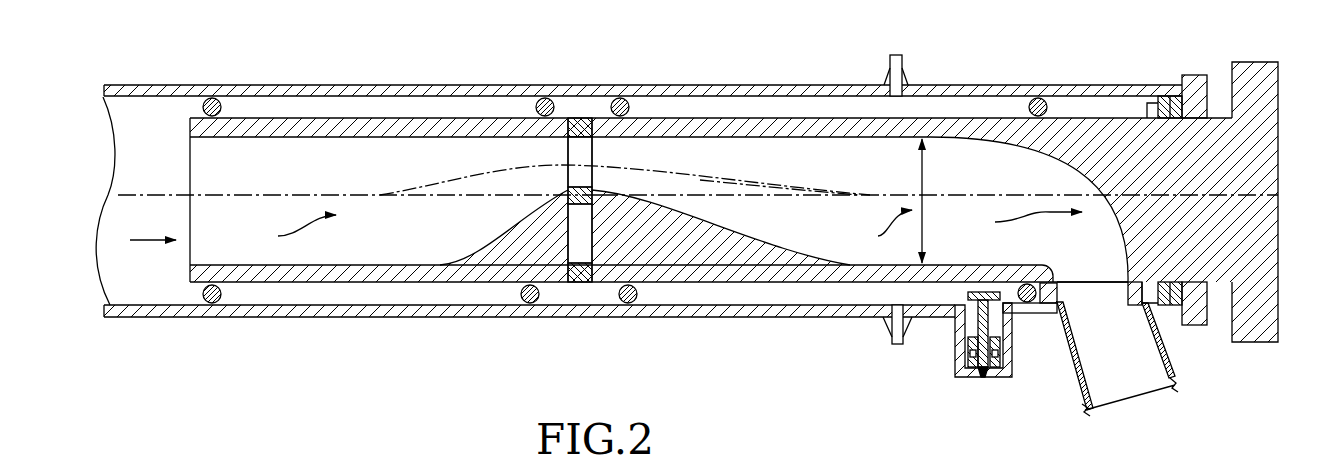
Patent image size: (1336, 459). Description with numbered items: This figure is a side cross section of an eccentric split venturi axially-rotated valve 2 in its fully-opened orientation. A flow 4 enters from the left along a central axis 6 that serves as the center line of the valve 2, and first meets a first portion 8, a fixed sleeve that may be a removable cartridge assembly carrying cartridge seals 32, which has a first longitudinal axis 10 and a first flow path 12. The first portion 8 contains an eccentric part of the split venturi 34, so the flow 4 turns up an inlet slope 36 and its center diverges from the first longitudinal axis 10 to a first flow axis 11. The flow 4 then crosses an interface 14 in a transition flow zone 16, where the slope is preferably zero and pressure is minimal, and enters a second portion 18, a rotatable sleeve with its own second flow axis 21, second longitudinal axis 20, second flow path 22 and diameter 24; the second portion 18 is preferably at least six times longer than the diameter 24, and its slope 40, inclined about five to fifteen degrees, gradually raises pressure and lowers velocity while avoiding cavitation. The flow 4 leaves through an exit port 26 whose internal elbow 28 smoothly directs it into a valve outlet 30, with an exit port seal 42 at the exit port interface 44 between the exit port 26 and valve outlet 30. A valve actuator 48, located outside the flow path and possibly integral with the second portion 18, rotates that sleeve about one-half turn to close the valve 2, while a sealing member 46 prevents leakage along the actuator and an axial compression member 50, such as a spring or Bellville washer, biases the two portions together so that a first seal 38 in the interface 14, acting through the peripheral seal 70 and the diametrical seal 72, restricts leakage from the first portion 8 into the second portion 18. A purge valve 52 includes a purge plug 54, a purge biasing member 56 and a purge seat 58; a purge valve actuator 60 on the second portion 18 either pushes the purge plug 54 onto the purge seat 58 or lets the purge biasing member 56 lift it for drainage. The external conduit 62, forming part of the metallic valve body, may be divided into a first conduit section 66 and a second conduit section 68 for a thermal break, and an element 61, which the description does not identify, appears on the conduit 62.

The valve 2 is at (232, 78).
The flow 4 is at (142, 240).
The central axis 6 is at (110, 182).
The first portion 8 is at (264, 118).
The first longitudinal axis 10 is at (285, 194).
The first flow axis 11 is at (480, 180).
The first flow path 12 is at (290, 229).
The interface 14 is at (575, 152).
The transition flow zone 16 is at (590, 116).
The second portion 18 is at (682, 117).
The second longitudinal axis 20 is at (870, 193).
The second flow axis 21 is at (700, 168).
The second flow path 22 is at (878, 230).
The diameter 24 is at (926, 177).
The exit port 26 is at (1018, 220).
The internal elbow 28 is at (1062, 167).
The valve outlet 30 is at (1130, 405).
The cartridge seals 32 is at (212, 303).
The split venturi 34 is at (530, 251).
The inlet slope 36 is at (500, 232).
The first seal 38 is at (570, 117).
The slope 40 is at (745, 232).
The exit port seal 42 is at (1060, 292).
The exit port interface 44 is at (1110, 298).
The sealing member 46 is at (1195, 75).
The valve actuator 48 is at (1265, 62).
The axial compression member 50 is at (1152, 96).
The purge valve 52 is at (956, 363).
The purge plug 54 is at (992, 318).
The purge biasing member 56 is at (1000, 355).
The purge seat 58 is at (983, 379).
The purge valve actuator 60 is at (950, 290).
The locating pin 61 is at (886, 57).
The conduit 62 is at (450, 85).
The first conduit section 66 is at (780, 85).
The second conduit section 68 is at (958, 85).
The peripheral seal 70 is at (595, 152).
The diametrical seal 72 is at (598, 190).